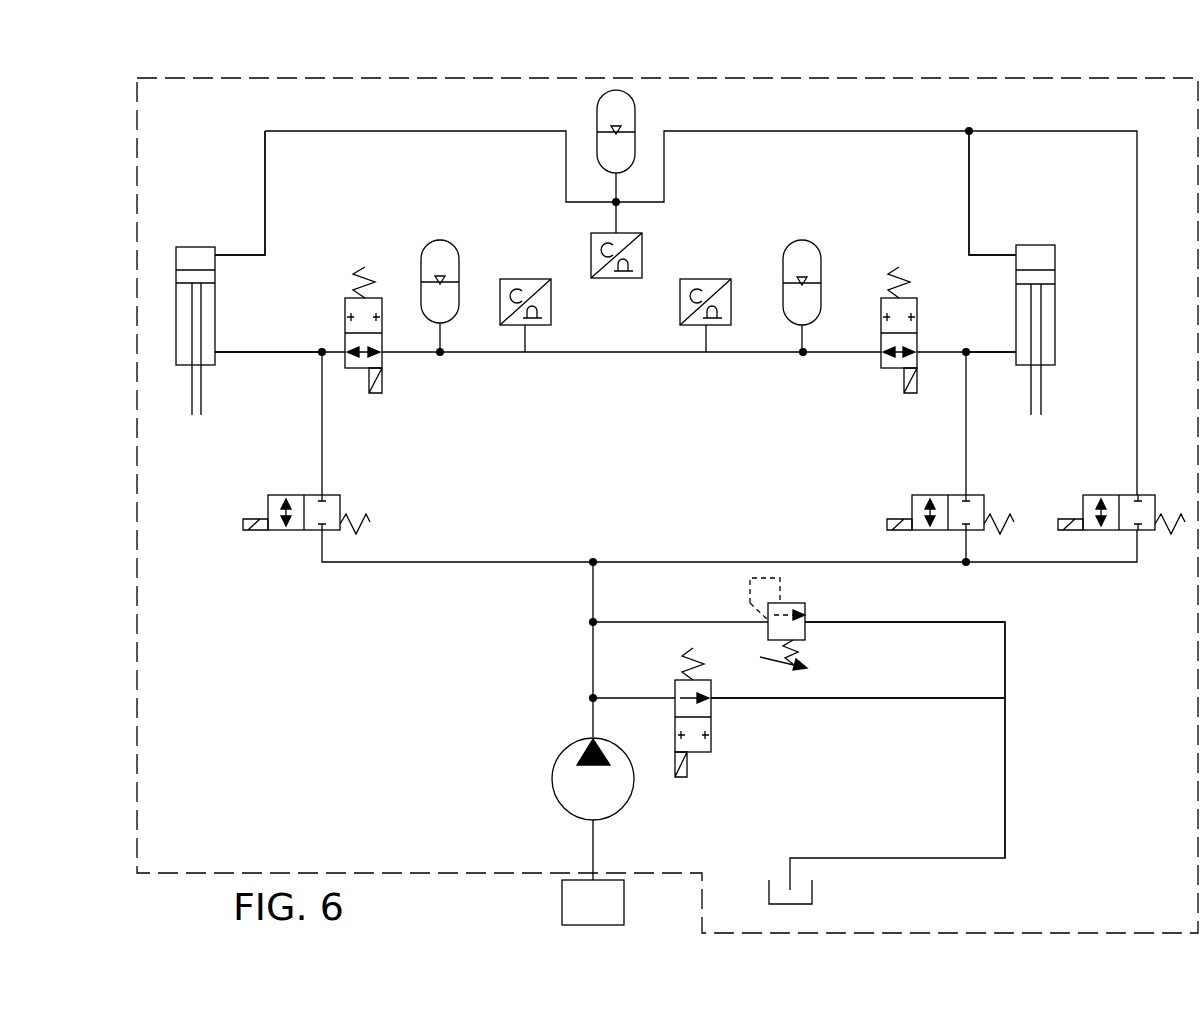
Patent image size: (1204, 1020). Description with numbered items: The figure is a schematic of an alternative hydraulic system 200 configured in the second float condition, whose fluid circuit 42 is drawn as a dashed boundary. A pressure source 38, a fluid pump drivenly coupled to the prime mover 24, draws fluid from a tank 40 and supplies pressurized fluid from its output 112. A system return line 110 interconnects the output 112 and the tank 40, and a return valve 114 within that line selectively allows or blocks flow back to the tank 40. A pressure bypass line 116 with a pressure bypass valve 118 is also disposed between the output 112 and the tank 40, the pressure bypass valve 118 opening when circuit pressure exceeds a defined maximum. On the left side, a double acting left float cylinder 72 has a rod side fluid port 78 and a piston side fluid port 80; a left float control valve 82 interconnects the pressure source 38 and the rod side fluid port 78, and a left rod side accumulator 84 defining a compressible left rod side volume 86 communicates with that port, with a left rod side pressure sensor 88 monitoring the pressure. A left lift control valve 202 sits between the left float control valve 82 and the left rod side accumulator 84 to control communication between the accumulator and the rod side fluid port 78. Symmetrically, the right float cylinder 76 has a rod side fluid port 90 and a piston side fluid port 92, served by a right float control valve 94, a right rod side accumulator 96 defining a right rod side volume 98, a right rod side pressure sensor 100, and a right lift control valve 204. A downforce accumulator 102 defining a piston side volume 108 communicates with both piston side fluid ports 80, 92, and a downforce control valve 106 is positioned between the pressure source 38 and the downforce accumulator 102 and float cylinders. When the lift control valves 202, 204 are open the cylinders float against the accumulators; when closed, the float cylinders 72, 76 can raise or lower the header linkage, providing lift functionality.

The fluid circuit 42 is at (349, 78).
The hydraulic system 200 is at (1025, 68).
The left float cylinder 72 is at (215, 305).
The piston side fluid port 80 is at (215, 257).
The rod side fluid port 78 is at (215, 345).
The right float cylinder 76 is at (1048, 245).
The piston side fluid port 92 is at (1012, 255).
The rod side fluid port 90 is at (1013, 353).
The left rod side accumulator 84 is at (458, 250).
The left rod side volume 86 is at (437, 258).
The left rod side pressure sensor 88 is at (512, 279).
The right rod side volume 98 is at (810, 250).
The right rod side accumulator 96 is at (800, 258).
The right rod side pressure sensor 100 is at (700, 279).
The downforce accumulator 102 is at (640, 140).
The piston side volume 108 is at (608, 108).
The left lift control valve 202 is at (384, 362).
The right lift control valve 204 is at (880, 362).
The left float control valve 82 is at (275, 532).
The right float control valve 94 is at (920, 495).
The downforce control valve 106 is at (1090, 495).
The pressure source 38 is at (555, 765).
The output 112 is at (592, 738).
The return valve 114 is at (712, 752).
The pressure bypass valve 118 is at (803, 605).
The pressure bypass line 116 is at (930, 622).
The system return line 110 is at (865, 698).
The tank 40 is at (812, 897).
The prime mover 24 is at (610, 917).